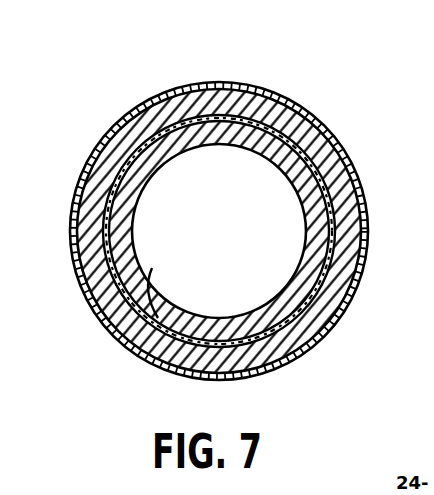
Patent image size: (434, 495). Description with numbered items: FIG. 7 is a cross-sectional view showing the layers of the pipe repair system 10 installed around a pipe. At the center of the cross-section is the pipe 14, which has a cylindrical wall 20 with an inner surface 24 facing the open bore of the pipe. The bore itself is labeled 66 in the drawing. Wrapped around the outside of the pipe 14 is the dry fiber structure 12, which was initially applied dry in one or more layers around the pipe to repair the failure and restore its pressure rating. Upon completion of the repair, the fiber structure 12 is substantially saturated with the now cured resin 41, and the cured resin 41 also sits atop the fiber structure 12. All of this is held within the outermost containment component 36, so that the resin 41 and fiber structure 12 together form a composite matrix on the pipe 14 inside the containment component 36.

The pipe repair system 10 is at (88, 131).
The dry fiber structure 12 is at (364, 207).
The pipe 14 is at (263, 242).
The cylindrical wall 20 is at (300, 307).
The inner surface 24 is at (141, 351).
The containment component 36 is at (276, 93).
The cured resin 41 is at (320, 127).
The bore 66 is at (236, 241).